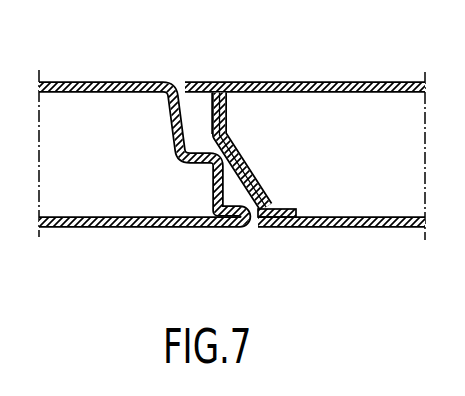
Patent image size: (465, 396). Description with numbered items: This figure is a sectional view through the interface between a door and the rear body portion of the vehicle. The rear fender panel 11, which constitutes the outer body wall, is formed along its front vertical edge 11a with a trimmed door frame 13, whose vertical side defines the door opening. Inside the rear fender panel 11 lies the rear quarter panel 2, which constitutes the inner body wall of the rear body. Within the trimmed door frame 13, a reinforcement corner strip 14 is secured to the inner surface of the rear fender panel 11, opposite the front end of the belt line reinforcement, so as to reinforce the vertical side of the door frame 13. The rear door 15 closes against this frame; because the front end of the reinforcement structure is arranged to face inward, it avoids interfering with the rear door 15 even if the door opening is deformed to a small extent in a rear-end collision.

The rear quarter panel 2 is at (312, 82).
The rear fender panel 11 is at (343, 228).
The front vertical edge 11a is at (208, 112).
The trimmed door frame 13 is at (213, 193).
The reinforcement corner strip 14 is at (222, 193).
The rear door 15 is at (93, 228).